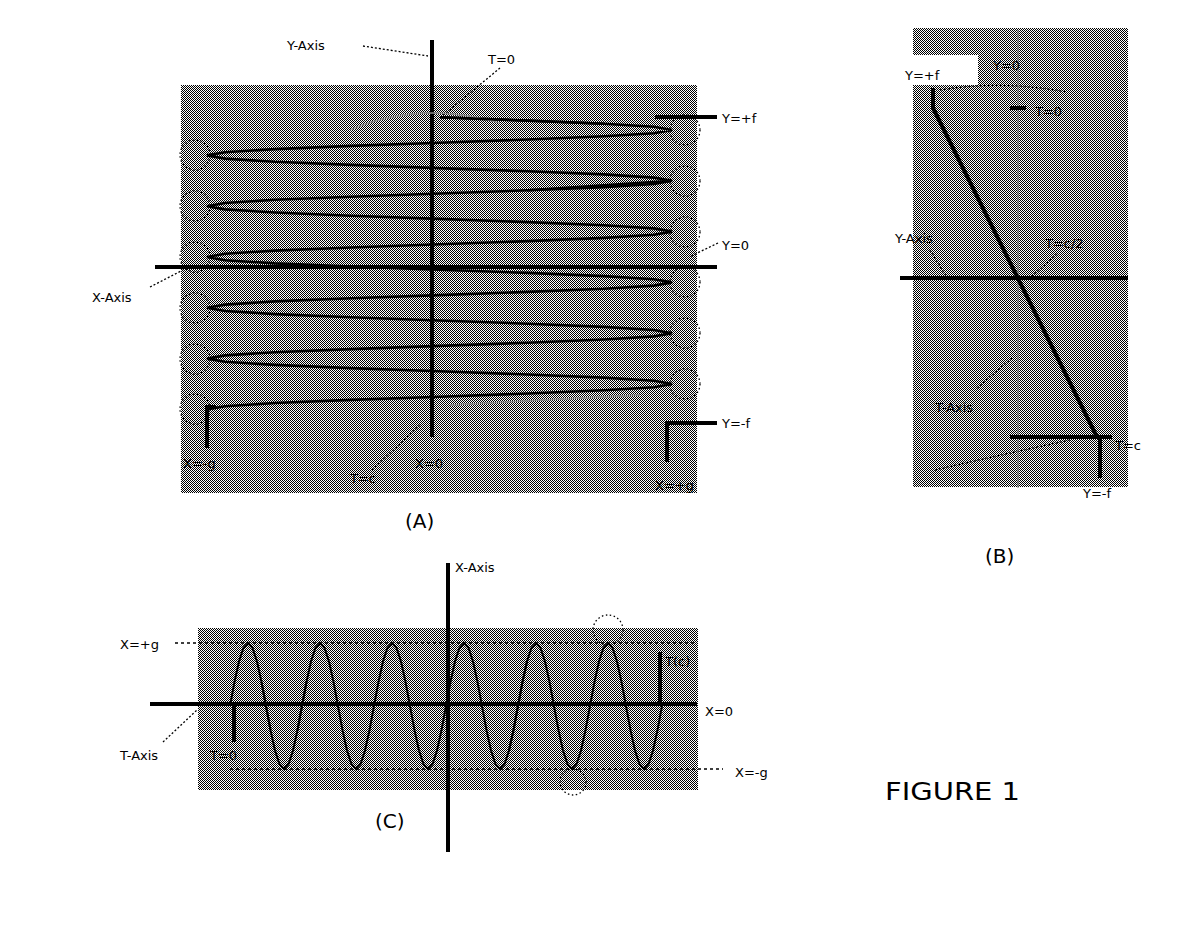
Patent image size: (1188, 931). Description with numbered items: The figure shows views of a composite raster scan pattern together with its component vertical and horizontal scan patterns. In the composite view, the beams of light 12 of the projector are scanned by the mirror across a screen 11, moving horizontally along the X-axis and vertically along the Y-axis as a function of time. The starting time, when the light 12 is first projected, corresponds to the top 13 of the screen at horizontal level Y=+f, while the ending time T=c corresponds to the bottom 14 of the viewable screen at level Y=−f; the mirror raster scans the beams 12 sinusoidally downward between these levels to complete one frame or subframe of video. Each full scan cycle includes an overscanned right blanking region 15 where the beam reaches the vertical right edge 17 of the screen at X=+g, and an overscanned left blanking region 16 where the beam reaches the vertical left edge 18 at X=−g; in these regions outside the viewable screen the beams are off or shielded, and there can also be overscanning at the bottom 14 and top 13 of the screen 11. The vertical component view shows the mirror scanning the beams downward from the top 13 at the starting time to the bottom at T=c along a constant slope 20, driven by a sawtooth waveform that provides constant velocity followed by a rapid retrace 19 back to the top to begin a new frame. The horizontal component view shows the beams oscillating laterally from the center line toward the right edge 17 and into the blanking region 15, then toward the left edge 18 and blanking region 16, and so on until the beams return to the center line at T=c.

The screen 11 is at (363, 408).
The beams of light 12 is at (503, 137).
The top of the screen 13 is at (227, 113).
The bottom of the viewable screen 14 is at (517, 403).
The overscanned right blanking region 15 is at (698, 173).
The overscanned left blanking region 16 is at (183, 360).
The vertical right edge of the screen 17 is at (697, 200).
The vertical left edge of the screen 18 is at (200, 236).
The rapid retrace 19 is at (350, 130).
The constant slope 20 is at (1057, 340).